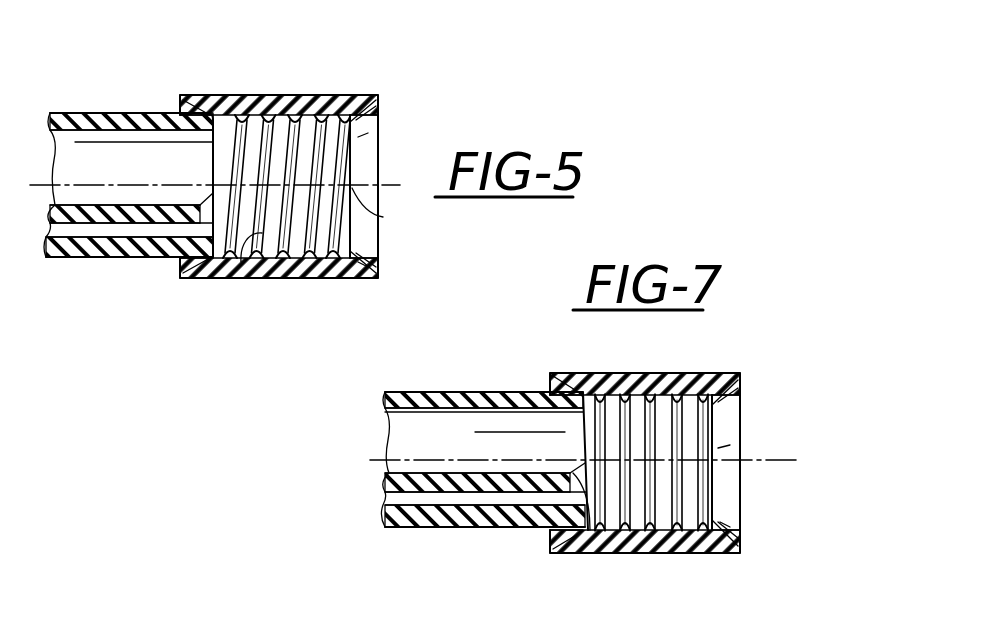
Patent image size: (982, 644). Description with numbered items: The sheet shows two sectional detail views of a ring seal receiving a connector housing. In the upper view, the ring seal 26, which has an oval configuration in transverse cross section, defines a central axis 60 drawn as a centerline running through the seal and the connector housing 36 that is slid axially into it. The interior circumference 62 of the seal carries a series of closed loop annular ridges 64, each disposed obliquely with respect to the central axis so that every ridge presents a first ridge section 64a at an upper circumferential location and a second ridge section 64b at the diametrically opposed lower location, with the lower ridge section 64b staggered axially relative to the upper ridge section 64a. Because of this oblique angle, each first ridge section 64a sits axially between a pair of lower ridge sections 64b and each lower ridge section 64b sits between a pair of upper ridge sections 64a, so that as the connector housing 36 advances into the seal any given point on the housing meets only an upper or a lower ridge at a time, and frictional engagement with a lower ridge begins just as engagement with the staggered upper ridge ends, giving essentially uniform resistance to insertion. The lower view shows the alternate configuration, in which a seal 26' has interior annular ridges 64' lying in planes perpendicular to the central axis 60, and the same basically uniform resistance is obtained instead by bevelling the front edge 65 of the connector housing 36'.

In FIG. 5, the ring seal 26 is at (311, 139).
In FIG. 5, the connector housing 36 is at (128, 143).
In FIG. 5, the central axis 60 is at (383, 217).
In FIG. 7, the central axis 60 is at (778, 463).
In FIG. 5, the interior circumference 62 is at (241, 262).
In FIG. 5, the annular ridges 64 is at (263, 162).
In FIG. 5, the first ridge section 64a is at (230, 95).
In FIG. 5, the second ridge section 64b is at (189, 260).
In FIG. 7, the front edge 65 is at (590, 530).
In FIG. 7, the seal 26' is at (679, 420).
In FIG. 7, the connector housing 36' is at (484, 426).
In FIG. 7, the interior annular ridges 64' is at (715, 454).